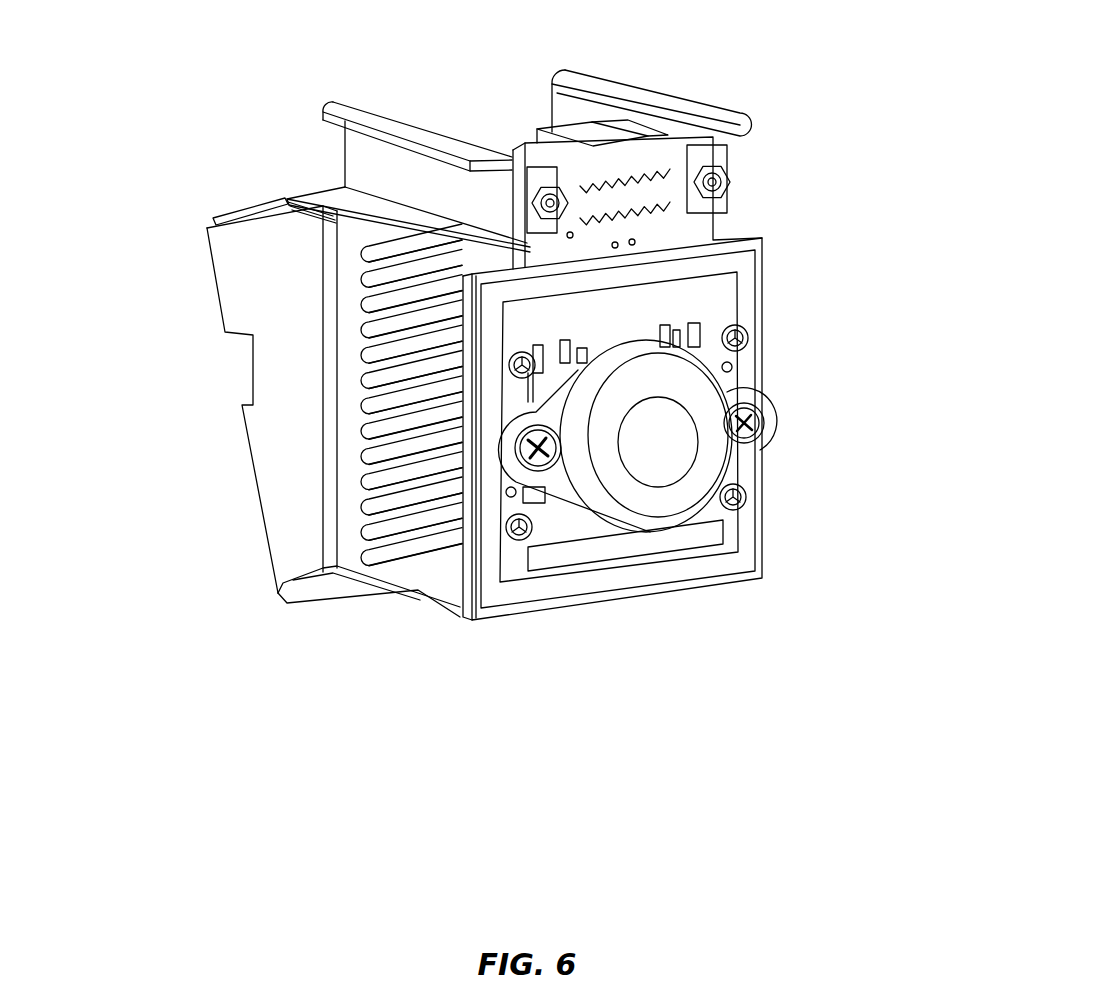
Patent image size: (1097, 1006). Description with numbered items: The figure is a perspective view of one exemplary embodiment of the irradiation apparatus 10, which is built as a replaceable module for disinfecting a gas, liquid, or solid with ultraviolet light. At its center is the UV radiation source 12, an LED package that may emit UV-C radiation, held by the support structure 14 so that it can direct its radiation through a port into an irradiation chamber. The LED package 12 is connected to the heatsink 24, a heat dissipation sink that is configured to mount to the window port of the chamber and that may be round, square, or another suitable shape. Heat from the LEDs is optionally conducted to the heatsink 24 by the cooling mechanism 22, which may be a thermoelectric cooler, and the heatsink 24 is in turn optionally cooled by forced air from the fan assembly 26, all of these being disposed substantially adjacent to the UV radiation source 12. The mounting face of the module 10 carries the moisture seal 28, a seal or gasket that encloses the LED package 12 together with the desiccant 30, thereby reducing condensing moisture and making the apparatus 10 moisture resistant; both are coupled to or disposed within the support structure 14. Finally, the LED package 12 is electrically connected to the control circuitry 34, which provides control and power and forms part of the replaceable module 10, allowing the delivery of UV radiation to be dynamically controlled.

The irradiation apparatus 10 is at (700, 62).
The UV radiation source 12 is at (660, 435).
The support structure 14 is at (383, 160).
The cooling mechanism 22 is at (585, 340).
The heatsink 24 is at (475, 322).
The fan assembly 26 is at (288, 442).
The moisture seal 28 is at (695, 567).
The desiccant 30 is at (697, 535).
The control circuitry 34 is at (633, 193).